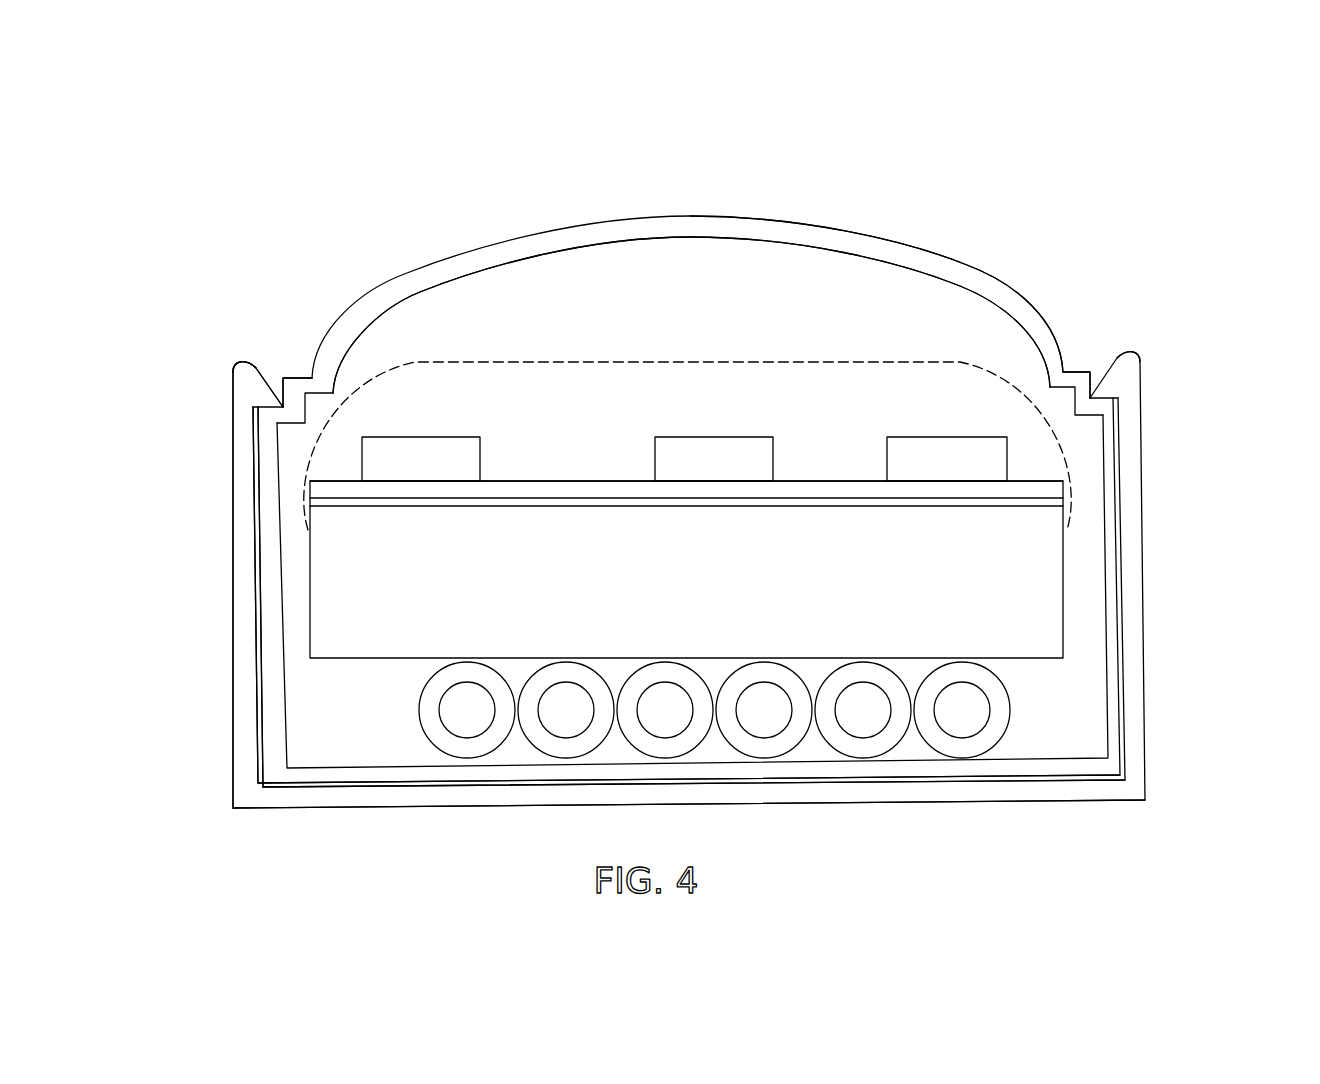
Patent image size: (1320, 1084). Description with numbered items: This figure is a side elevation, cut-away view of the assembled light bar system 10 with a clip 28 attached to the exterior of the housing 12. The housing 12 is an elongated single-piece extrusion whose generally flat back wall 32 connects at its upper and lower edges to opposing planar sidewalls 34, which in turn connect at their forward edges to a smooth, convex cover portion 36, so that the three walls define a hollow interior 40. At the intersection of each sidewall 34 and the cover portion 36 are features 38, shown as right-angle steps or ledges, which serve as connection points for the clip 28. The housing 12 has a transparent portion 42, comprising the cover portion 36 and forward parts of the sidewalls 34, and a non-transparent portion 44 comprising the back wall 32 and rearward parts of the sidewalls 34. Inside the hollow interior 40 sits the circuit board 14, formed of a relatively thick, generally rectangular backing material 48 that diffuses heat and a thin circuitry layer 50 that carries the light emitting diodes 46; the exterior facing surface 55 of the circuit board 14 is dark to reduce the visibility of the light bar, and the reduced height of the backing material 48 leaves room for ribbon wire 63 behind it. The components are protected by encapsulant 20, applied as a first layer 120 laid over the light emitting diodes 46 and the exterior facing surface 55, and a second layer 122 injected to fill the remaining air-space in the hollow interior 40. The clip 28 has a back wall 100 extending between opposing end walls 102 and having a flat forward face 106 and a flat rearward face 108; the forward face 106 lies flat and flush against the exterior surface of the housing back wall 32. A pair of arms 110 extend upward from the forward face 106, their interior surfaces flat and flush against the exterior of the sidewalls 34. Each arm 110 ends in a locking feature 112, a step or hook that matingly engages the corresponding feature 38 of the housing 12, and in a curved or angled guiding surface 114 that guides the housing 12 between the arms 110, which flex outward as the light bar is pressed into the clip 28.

The light bar system 10 is at (166, 158).
The housing 12 is at (256, 549).
The circuit board 14 is at (298, 477).
The encapsulant 20 is at (658, 253).
The clip 28 is at (231, 415).
The back wall 32 is at (352, 790).
The sidewalls 34 is at (267, 610).
The cover portion 36 is at (398, 292).
The features 38 is at (263, 392).
The hollow interior 40 is at (450, 330).
The transparent portion 42 is at (1200, 219).
The non-transparent portion 44 is at (1184, 548).
The light emitting diodes 46 is at (422, 437).
The backing material 48 is at (1058, 572).
The circuitry layer 50 is at (1058, 490).
The exterior facing surface 55 is at (826, 481).
The ribbon wire 63 is at (1004, 706).
The back wall 100 is at (1142, 610).
The end walls 102 is at (750, 797).
The forward face 106 is at (886, 785).
The rearward face 108 is at (803, 810).
The arms 110 is at (240, 672).
The locking feature 112 is at (283, 385).
The guiding surface 114 is at (246, 362).
The first layer 120 is at (678, 398).
The second layer 122 is at (826, 291).